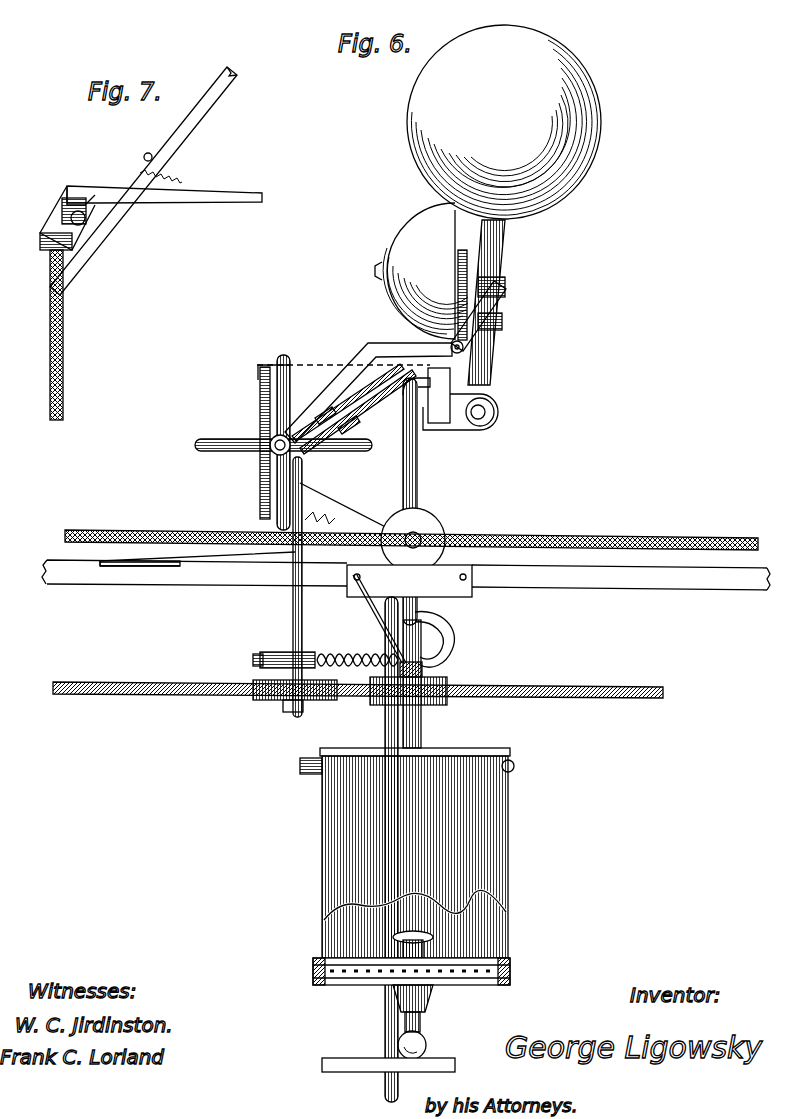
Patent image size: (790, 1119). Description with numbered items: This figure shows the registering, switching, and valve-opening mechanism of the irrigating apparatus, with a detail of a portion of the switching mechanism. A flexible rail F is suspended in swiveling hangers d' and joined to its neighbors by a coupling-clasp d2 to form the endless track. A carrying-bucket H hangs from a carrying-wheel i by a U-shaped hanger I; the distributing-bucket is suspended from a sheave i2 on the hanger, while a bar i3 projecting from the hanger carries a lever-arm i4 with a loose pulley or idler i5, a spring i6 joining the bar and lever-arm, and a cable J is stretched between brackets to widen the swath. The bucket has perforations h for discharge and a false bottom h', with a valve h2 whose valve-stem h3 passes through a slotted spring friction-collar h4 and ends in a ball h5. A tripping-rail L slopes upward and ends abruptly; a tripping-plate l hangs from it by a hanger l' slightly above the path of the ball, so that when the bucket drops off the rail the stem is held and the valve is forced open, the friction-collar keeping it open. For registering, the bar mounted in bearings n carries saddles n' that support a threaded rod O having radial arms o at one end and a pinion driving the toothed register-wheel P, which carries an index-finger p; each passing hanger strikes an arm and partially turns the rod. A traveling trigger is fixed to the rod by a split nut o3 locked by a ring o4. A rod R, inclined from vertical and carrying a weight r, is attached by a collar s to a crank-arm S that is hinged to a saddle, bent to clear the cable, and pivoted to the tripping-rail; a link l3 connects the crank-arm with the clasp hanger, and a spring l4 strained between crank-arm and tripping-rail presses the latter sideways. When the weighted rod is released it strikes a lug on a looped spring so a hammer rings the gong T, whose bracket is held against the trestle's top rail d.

In FIG. 6, the weight r is at (504, 122).
In FIG. 6, the rod R is at (494, 302).
In FIG. 6, the gong T is at (421, 271).
In FIG. 6, the collar s is at (496, 303).
In FIG. 7, the collar s is at (161, 159).
In FIG. 6, the crank-arm S is at (381, 362).
In FIG. 7, the crank-arm S is at (143, 181).
In FIG. 6, the split nut o3 is at (348, 402).
In FIG. 6, the ring o4 is at (358, 412).
In FIG. 6, the saddles n' is at (386, 406).
In FIG. 6, the swiveling hangers d' is at (419, 501).
In FIG. 6, the top rail d is at (439, 395).
In FIG. 6, the bearings n is at (465, 413).
In FIG. 6, the threaded rod O is at (268, 455).
In FIG. 6, the radial arms o is at (290, 530).
In FIG. 6, the toothed register-wheel P is at (255, 443).
In FIG. 6, the index-finger p is at (266, 373).
In FIG. 6, the spring l4 is at (304, 512).
In FIG. 6, the hangers I is at (395, 515).
In FIG. 6, the carrying-wheels i is at (415, 540).
In FIG. 6, the bar G is at (411, 533).
In FIG. 6, the rails F is at (406, 575).
In FIG. 6, the tripping-rail L is at (228, 568).
In FIG. 7, the tripping-rail L is at (162, 200).
In FIG. 6, the coupling-clasps d2 is at (409, 581).
In FIG. 6, the link l3 is at (380, 612).
In FIG. 6, the lever-arms i4 is at (303, 612).
In FIG. 6, the bars i3 is at (279, 659).
In FIG. 6, the spring i6 is at (330, 648).
In FIG. 6, the sheaves i2 is at (415, 658).
In FIG. 6, the cable J is at (358, 681).
In FIG. 6, the loose pulleys or idlers i5 is at (295, 700).
In FIG. 6, the hanger l' is at (385, 849).
In FIG. 6, the carrying-bucket H is at (418, 858).
In FIG. 6, the valve h2 is at (413, 936).
In FIG. 6, the perforations h is at (409, 968).
In FIG. 6, the false bottom h' is at (514, 931).
In FIG. 6, the valve-stem h3 is at (378, 985).
In FIG. 6, the spring friction-collar h4 is at (428, 1002).
In FIG. 6, the ball h5 is at (421, 1044).
In FIG. 6, the tripping-plate l is at (388, 1055).
In FIG. 7, the tripping-plate l is at (67, 303).